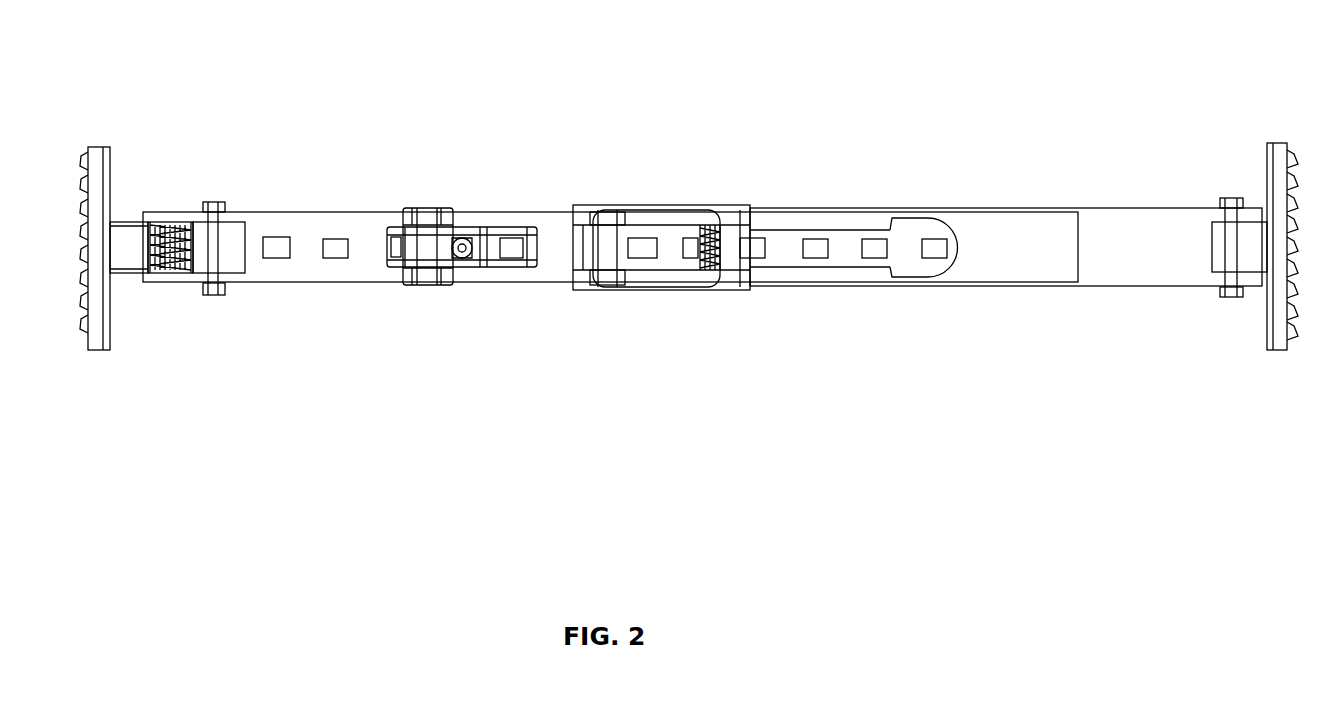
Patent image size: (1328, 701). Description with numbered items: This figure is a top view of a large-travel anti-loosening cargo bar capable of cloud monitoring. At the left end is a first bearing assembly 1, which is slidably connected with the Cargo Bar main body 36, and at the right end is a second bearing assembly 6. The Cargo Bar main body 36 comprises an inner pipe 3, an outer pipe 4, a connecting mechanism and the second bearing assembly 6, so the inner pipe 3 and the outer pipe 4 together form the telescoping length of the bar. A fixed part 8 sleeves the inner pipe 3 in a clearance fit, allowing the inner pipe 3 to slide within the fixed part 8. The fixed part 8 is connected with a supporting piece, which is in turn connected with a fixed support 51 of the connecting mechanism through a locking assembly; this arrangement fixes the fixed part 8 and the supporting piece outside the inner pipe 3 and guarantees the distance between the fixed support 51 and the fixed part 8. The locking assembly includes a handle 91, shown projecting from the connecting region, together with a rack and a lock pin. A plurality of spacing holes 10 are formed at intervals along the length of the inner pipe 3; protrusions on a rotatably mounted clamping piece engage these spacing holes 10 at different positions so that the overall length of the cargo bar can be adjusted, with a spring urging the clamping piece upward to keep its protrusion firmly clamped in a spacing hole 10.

The first bearing assembly 1 is at (93, 130).
The second bearing assembly 6 is at (1285, 145).
The inner pipe 3 is at (312, 266).
The outer pipe 4 is at (1142, 265).
The fixed part 8 is at (447, 287).
The spacing hole 10 is at (273, 248).
The fixed support 51 is at (585, 293).
The handle 91 is at (840, 238).
The Cargo Bar main body 36 is at (1293, 386).